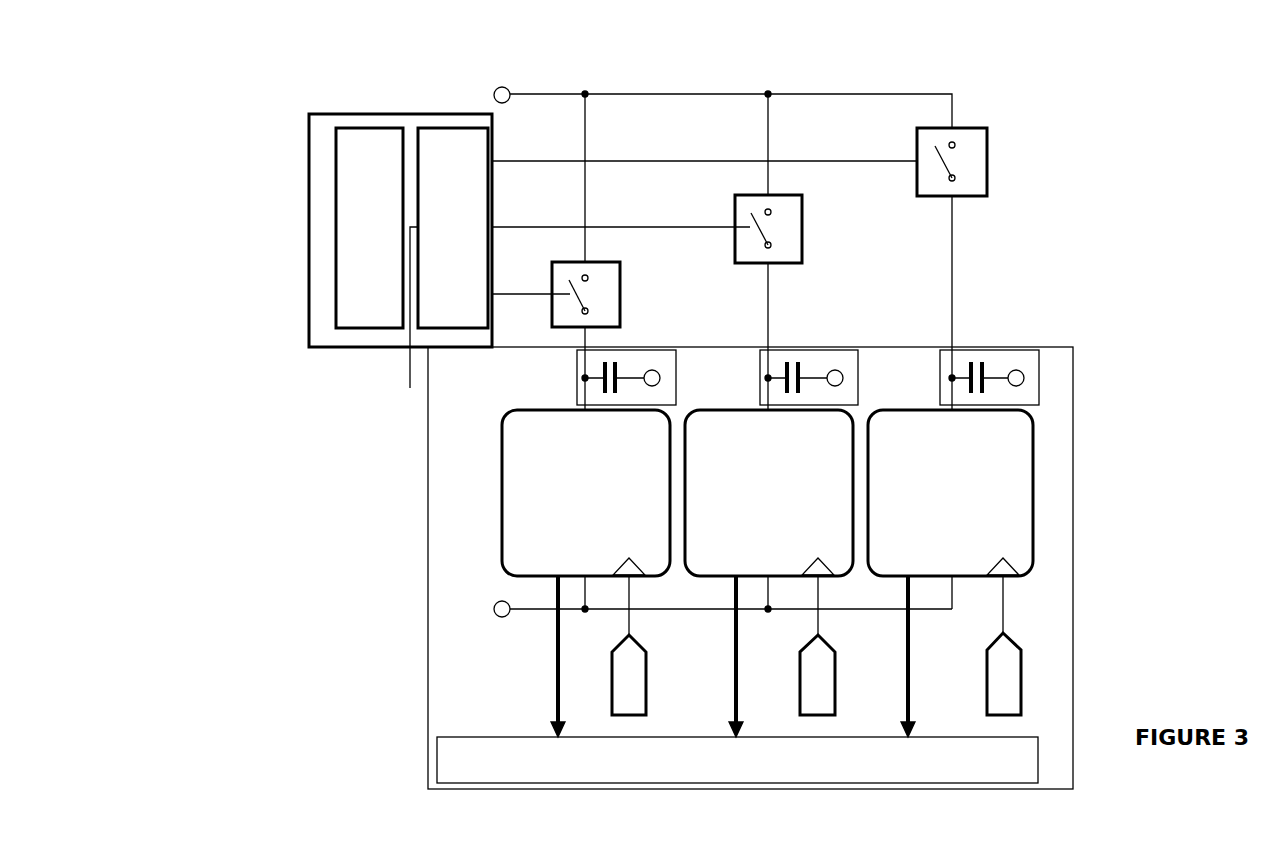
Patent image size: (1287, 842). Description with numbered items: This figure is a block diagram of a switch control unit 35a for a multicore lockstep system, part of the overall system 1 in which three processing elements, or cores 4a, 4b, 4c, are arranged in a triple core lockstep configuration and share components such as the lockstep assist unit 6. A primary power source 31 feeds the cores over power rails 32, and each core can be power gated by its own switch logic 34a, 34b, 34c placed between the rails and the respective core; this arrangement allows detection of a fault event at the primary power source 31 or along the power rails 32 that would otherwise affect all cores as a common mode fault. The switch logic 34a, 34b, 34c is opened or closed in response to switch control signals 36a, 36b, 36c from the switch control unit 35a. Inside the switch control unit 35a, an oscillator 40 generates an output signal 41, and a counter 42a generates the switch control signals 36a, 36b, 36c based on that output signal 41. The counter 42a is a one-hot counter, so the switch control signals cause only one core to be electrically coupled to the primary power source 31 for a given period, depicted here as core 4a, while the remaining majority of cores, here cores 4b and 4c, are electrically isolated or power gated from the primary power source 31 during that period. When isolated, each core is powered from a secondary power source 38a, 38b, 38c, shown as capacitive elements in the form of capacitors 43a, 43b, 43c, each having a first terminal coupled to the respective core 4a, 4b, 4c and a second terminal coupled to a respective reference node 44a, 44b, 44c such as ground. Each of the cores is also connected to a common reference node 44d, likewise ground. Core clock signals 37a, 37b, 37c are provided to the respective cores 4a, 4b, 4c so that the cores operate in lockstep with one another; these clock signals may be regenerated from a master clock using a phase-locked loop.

The system 1 is at (148, 160).
The primary power source 31 is at (494, 95).
The power rails 32 is at (720, 93).
The switch logic 34a is at (622, 290).
The switch logic 34b is at (806, 225).
The switch logic 34c is at (990, 158).
The switch control unit 35a is at (318, 190).
The switch control signal 36a is at (508, 294).
The switch control signal 36b is at (527, 227).
The switch control signal 36c is at (535, 161).
The core clock signal 37a is at (648, 680).
The core clock signal 37b is at (837, 680).
The core clock signal 37c is at (1023, 685).
The secondary power source 38a is at (678, 362).
The secondary power source 38b is at (860, 366).
The secondary power source 38c is at (1040, 362).
The oscillator 40 is at (369, 228).
The output signal 41 is at (406, 324).
The counter 42a is at (453, 228).
The capacitor 43a is at (604, 376).
The capacitor 43b is at (791, 360).
The capacitor 43c is at (978, 360).
The reference node 44a is at (656, 371).
The reference node 44b is at (840, 370).
The reference node 44c is at (1022, 370).
The reference node 44d is at (699, 610).
The processing element 4a is at (555, 453).
The processing element 4b is at (740, 453).
The processing element 4c is at (925, 453).
The lockstep assist unit 6 is at (467, 772).